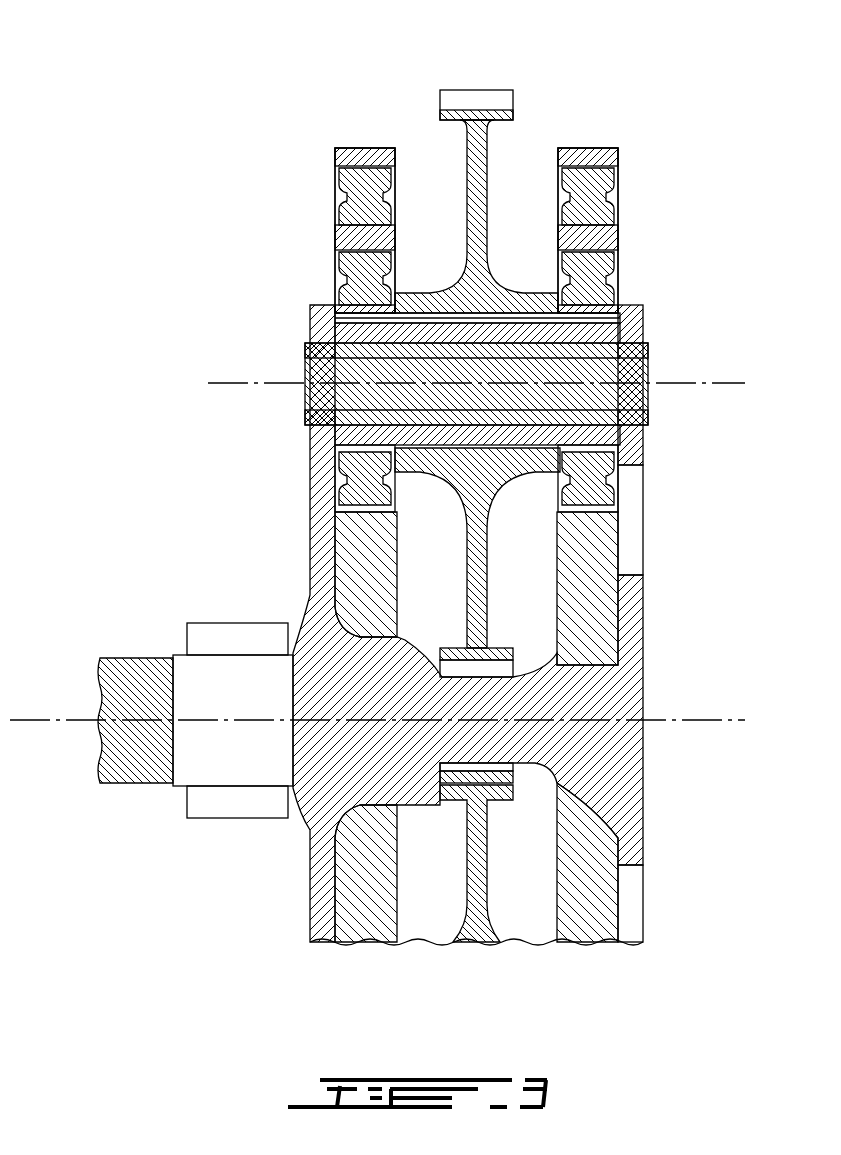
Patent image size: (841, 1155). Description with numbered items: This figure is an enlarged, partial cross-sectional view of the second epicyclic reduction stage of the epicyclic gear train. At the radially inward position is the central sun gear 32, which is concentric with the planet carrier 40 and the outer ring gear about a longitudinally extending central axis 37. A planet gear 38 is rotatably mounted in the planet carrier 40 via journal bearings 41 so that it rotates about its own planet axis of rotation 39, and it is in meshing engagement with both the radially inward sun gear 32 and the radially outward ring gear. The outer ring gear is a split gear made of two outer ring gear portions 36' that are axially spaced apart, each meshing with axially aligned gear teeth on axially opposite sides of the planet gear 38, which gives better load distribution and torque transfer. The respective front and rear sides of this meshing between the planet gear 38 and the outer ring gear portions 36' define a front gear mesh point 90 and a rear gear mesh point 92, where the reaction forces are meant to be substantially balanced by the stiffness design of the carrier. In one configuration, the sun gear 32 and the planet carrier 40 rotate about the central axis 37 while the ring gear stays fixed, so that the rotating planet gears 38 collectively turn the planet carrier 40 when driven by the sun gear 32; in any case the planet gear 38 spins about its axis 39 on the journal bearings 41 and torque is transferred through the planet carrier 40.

The sun gear 32 is at (495, 673).
The outer ring gear portion 36' is at (476, 284).
The central axis 37 is at (706, 718).
The planet gear 38 is at (482, 173).
The planet axis of rotation 39 is at (707, 382).
The planet carrier 40 is at (290, 528).
The journal bearing 41 is at (410, 328).
The front gear mesh point 90 is at (340, 268).
The rear gear mesh point 92 is at (607, 268).